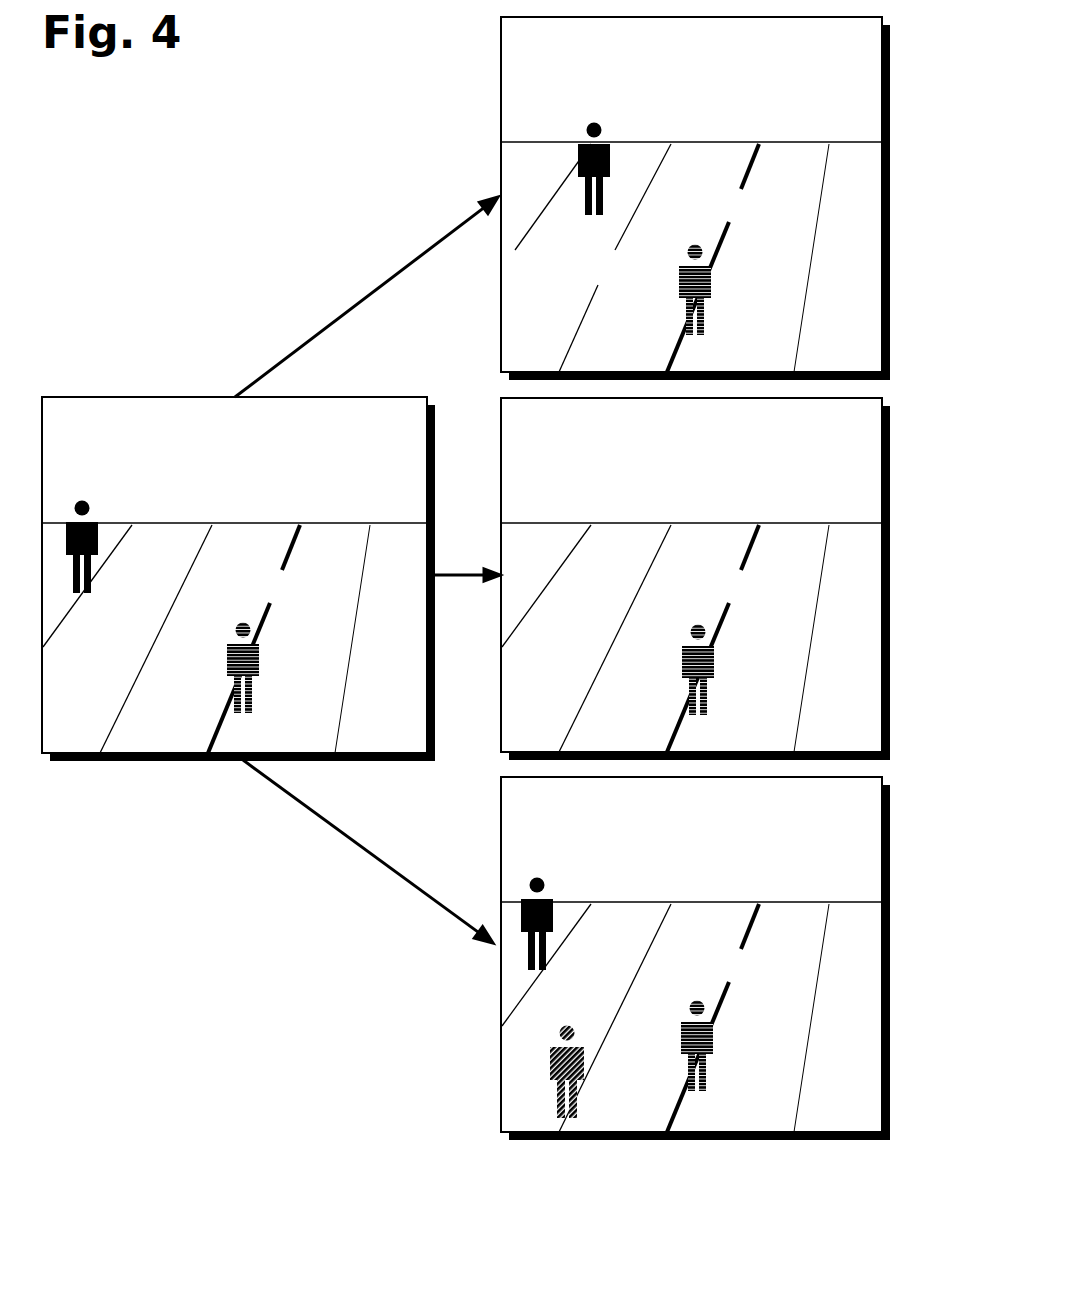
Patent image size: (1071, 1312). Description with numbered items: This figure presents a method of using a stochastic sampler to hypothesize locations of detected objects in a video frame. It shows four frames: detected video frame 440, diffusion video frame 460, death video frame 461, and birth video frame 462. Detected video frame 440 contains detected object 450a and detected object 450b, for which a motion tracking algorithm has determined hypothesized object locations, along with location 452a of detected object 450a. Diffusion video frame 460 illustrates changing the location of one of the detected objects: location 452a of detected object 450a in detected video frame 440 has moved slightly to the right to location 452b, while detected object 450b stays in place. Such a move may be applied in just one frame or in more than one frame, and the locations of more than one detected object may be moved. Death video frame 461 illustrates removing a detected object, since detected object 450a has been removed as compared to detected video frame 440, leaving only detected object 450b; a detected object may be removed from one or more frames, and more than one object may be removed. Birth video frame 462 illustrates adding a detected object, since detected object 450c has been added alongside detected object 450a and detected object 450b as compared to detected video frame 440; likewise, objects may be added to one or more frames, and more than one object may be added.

The detected video frame 440 is at (271, 570).
The diffusion video frame 460 is at (695, 198).
The death video frame 461 is at (695, 579).
The birth video frame 462 is at (695, 958).
The detected object 450a is at (595, 922).
The detected object 450b is at (730, 1019).
The detected object 450c is at (524, 1058).
The location 452a is at (118, 638).
The location 452b is at (567, 226).